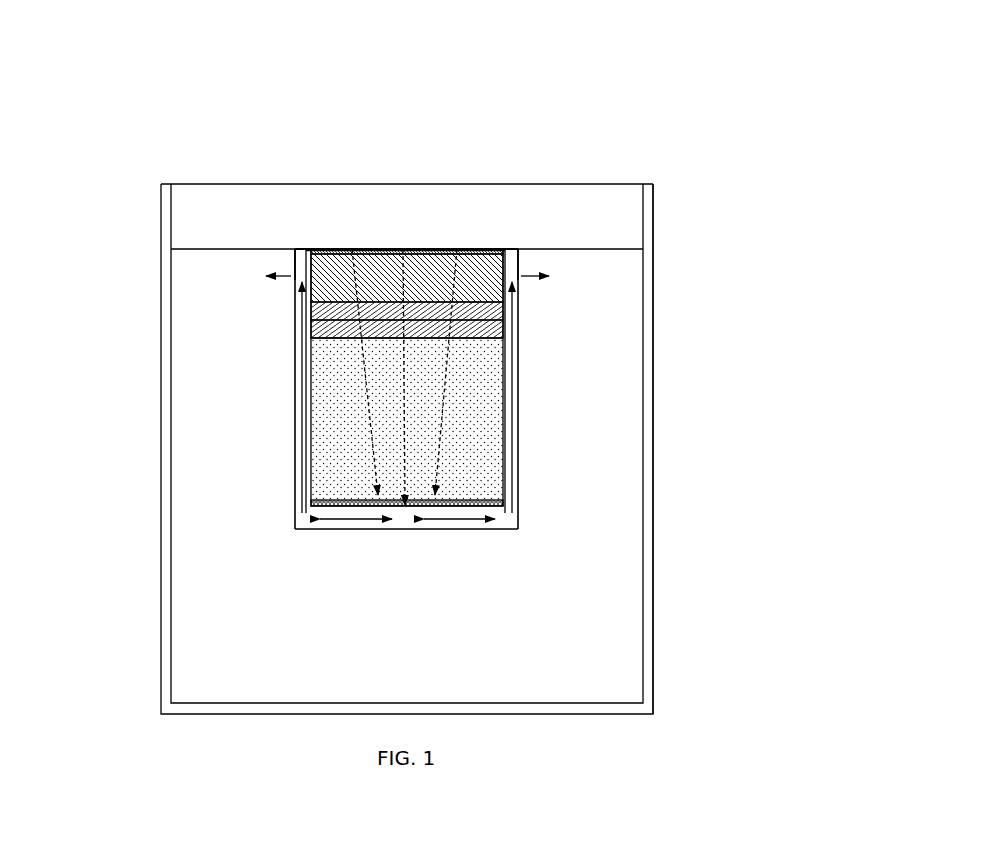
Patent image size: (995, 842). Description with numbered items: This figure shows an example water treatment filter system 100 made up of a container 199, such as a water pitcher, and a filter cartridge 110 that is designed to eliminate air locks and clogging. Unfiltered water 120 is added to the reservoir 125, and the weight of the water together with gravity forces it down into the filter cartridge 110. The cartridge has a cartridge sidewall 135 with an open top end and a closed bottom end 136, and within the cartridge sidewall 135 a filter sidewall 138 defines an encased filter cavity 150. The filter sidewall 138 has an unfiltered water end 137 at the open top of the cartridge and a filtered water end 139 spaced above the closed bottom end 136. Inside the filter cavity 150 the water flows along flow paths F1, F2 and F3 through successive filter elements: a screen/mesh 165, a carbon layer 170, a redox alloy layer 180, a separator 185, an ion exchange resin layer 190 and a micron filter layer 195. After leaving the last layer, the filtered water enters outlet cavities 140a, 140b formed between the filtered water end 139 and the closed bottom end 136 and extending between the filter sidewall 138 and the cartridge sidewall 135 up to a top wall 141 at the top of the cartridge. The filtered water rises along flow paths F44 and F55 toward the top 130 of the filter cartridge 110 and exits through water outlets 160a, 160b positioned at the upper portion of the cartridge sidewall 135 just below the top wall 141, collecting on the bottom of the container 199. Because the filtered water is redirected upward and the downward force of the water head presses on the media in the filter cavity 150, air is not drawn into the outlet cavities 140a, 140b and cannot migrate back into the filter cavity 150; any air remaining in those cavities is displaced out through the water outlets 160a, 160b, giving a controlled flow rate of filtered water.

The filter system 100 is at (154, 99).
The filter cartridge 110 is at (527, 505).
The water 120 is at (406, 182).
The reservoir 125 is at (157, 217).
The top of the filter cartridge 130 is at (290, 257).
The cartridge sidewall 135 is at (292, 370).
The closed bottom end 136 is at (298, 532).
The unfiltered water end 137 is at (507, 248).
The filter sidewall 138 is at (508, 402).
The filtered water end 139 is at (508, 502).
The outlet cavity 140a is at (523, 351).
The outlet cavity 140b is at (291, 350).
The top wall 141 is at (297, 246).
The encased filter cavity 150 is at (327, 483).
The water outlet 160a is at (525, 268).
The water outlet 160b is at (290, 268).
The screen/mesh 165 is at (494, 246).
The carbon layer 170 is at (441, 283).
The redox alloy layer 180 is at (494, 308).
The separator 185 is at (494, 328).
The ion exchange resin layer 190 is at (491, 438).
The micron filter layer 195 is at (480, 507).
The container 199 is at (657, 335).
The flow path F1 is at (361, 372).
The flow path F2 is at (391, 377).
The flow path F3 is at (437, 372).
The flow path F44 is at (537, 394).
The flow path F55 is at (271, 394).